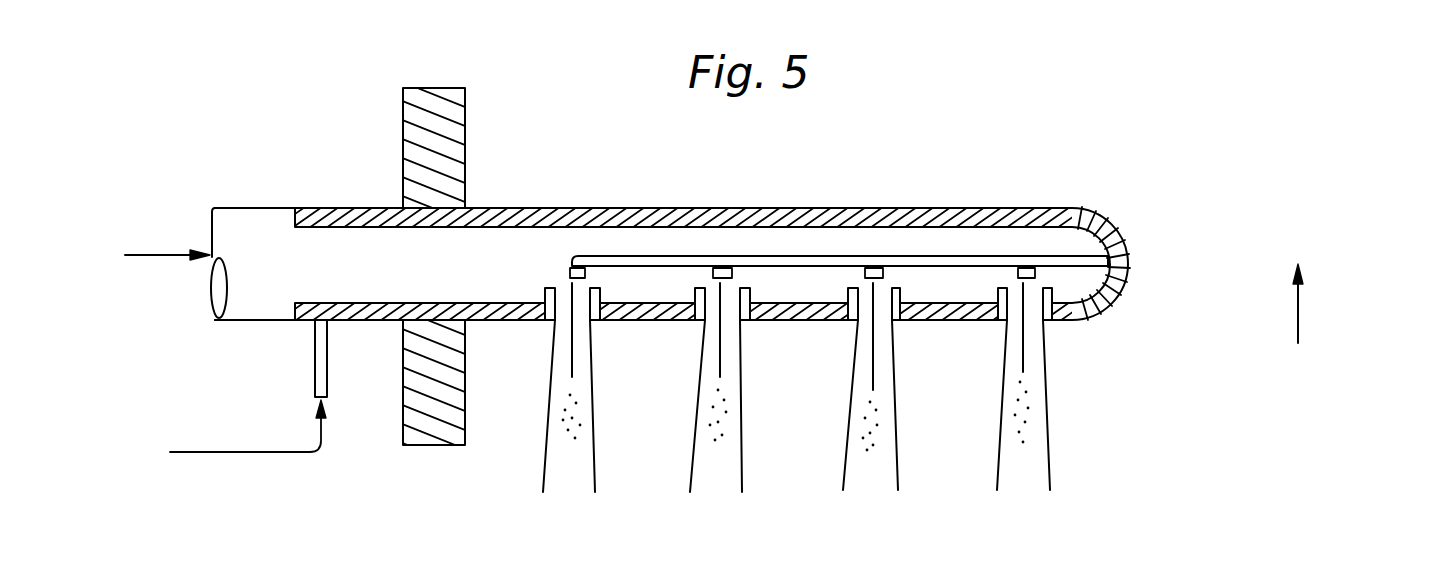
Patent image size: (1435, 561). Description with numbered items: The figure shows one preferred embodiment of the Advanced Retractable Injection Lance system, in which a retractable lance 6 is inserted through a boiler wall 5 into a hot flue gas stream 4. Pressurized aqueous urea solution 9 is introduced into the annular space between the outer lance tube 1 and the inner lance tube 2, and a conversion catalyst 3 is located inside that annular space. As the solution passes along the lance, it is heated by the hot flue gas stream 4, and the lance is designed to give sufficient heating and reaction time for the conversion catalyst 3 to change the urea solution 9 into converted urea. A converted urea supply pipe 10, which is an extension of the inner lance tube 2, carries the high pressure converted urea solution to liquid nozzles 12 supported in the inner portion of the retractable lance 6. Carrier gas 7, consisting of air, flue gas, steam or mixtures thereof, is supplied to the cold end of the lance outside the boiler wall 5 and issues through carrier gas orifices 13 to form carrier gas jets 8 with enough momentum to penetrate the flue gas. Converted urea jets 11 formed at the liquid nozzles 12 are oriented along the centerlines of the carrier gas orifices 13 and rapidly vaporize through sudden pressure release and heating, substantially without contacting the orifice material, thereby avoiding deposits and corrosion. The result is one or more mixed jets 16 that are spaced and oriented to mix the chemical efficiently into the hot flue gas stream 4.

The outer lance tube 1 is at (853, 203).
The inner lance tube 2 is at (731, 216).
The conversion catalyst 3 is at (549, 216).
The hot flue gas stream 4 is at (1295, 310).
The boiler wall 5 is at (398, 411).
The retractable lance 6 is at (257, 200).
The carrier gas 7 is at (165, 253).
The carrier gas jets 8 is at (596, 434).
The pressurized aqueous urea solution 9 is at (322, 455).
The converted urea supply pipe 10 is at (1075, 268).
The converted urea jets 11 is at (702, 370).
The liquid nozzles 12 is at (1010, 263).
The carrier gas orifices 13 is at (710, 289).
The mixed jets 16 is at (558, 398).